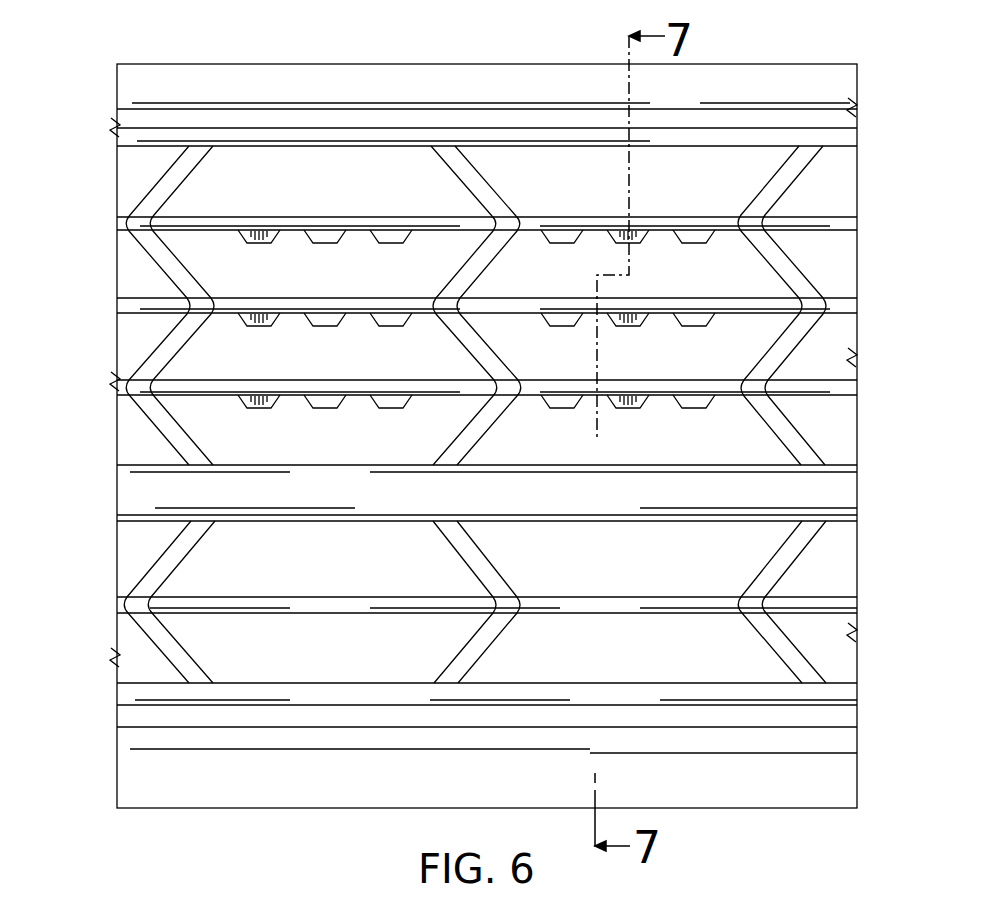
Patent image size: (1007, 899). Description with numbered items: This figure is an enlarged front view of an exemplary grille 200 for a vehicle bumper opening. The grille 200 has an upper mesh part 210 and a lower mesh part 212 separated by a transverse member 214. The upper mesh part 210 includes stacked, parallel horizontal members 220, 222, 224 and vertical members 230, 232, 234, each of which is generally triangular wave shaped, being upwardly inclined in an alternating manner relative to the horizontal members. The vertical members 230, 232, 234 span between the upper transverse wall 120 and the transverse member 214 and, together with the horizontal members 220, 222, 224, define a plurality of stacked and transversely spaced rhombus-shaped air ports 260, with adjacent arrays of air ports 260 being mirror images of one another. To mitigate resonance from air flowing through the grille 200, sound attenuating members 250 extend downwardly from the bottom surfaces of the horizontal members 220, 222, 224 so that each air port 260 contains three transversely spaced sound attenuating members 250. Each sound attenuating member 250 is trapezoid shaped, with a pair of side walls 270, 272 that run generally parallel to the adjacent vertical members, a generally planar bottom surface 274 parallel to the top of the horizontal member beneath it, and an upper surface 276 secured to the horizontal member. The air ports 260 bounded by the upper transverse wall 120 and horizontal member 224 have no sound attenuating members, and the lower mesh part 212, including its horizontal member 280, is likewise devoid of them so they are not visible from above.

The grille 200 is at (83, 125).
The upper transverse wall 120 is at (385, 133).
The upper mesh part 210 is at (451, 287).
The lower mesh part 212 is at (451, 574).
The transverse member 214 is at (322, 495).
The horizontal member 220 is at (458, 382).
The horizontal member 222 is at (413, 293).
The horizontal member 224 is at (440, 212).
The vertical member 230 is at (175, 183).
The vertical member 232 is at (480, 180).
The vertical member 234 is at (780, 182).
The sound attenuating member 250 is at (320, 237).
The air port 260 is at (355, 253).
The side wall 270 is at (680, 242).
The side wall 272 is at (712, 240).
The bottom surface 274 is at (700, 244).
The upper surface 276 is at (695, 232).
The horizontal member 280 is at (600, 608).